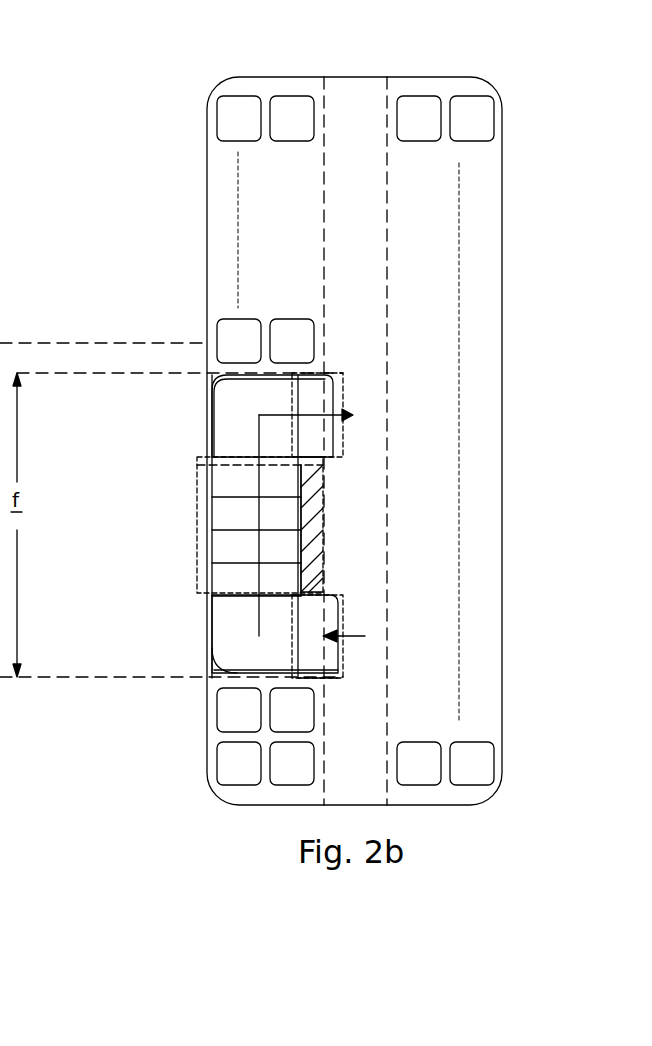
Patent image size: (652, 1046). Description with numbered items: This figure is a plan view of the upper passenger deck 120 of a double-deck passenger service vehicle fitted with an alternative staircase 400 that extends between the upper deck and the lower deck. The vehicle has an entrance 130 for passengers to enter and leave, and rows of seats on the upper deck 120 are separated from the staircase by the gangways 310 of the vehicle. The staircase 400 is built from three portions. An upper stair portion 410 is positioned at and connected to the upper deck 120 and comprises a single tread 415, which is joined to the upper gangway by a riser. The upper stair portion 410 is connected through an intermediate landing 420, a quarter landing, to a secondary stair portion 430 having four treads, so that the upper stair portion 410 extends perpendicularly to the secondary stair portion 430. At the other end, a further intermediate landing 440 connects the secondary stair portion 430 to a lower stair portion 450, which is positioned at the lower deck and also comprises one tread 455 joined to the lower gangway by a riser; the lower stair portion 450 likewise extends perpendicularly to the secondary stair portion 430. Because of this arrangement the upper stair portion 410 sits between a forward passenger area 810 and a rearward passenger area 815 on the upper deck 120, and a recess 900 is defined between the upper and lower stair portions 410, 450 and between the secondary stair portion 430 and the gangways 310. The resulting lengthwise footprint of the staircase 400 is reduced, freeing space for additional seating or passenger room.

The upper passenger deck 120 is at (443, 226).
The entrance 130 is at (503, 742).
The gangways 310 is at (352, 195).
The staircase 400 is at (228, 497).
The upper stair portion 410 is at (343, 612).
The tread 415 is at (318, 657).
The intermediate landing 420 is at (228, 622).
The secondary stair portion 430 is at (197, 540).
The further intermediate landing 440 is at (228, 424).
The lower stair portion 450 is at (343, 392).
The tread 455 is at (313, 437).
The forward passenger area 810 is at (190, 738).
The rearward passenger area 815 is at (193, 248).
The recess 900 is at (318, 519).